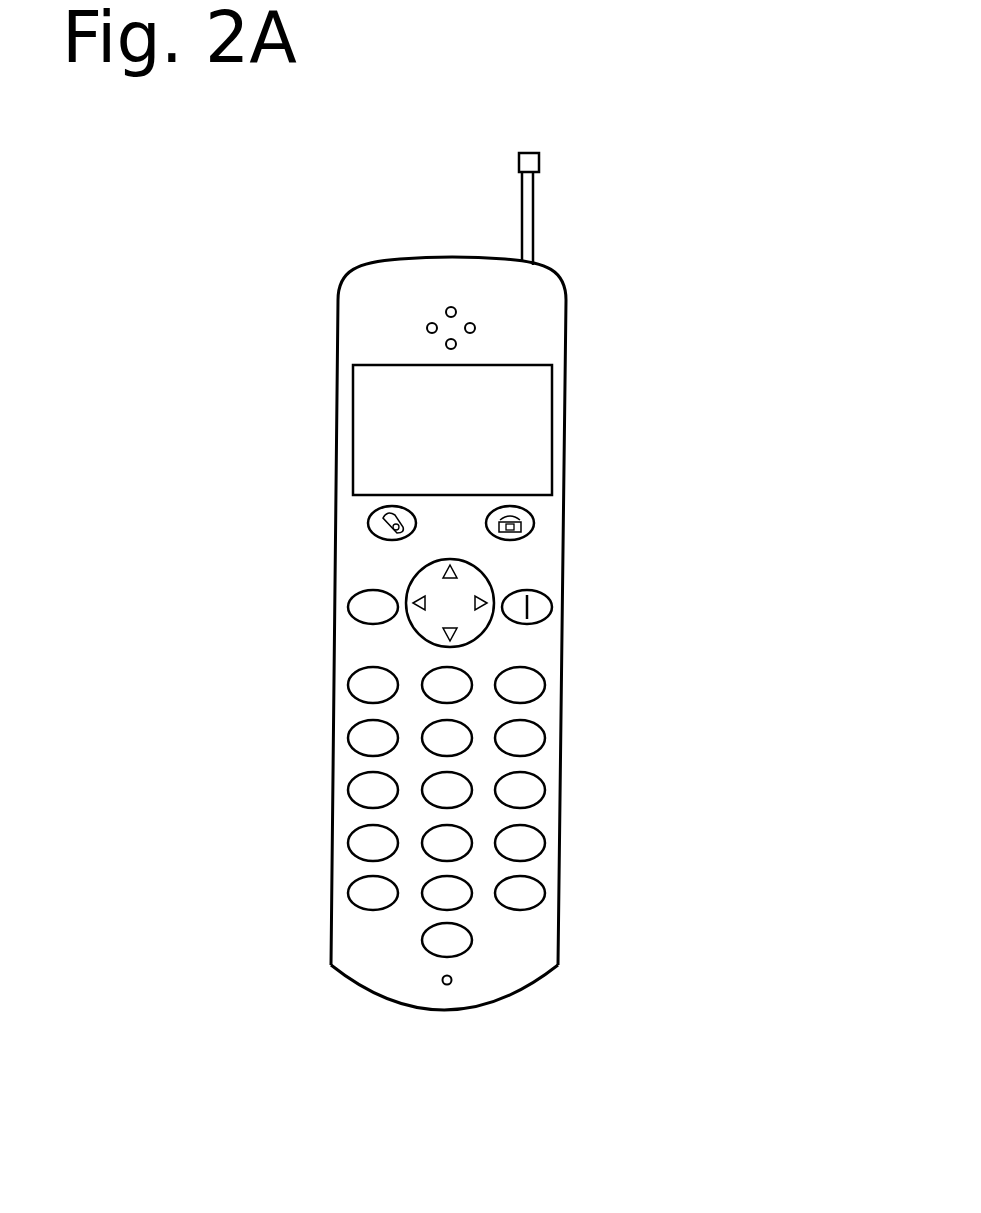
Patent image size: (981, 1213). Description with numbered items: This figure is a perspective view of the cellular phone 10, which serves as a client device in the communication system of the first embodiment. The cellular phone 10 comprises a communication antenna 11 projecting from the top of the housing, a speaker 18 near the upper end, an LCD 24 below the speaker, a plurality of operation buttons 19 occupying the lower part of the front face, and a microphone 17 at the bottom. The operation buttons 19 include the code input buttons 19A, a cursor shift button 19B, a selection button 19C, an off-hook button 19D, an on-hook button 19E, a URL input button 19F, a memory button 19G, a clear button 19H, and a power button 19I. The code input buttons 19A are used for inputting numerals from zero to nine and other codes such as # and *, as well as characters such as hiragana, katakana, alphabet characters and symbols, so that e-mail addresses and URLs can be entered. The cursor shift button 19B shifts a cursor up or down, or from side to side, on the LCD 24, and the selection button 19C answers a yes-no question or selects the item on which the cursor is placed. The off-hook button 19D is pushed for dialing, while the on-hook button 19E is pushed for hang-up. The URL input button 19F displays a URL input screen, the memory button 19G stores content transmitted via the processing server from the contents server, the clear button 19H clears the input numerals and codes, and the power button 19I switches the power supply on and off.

The cellular phone 10 is at (582, 532).
The communication antenna 11 is at (533, 205).
The microphone 17 is at (452, 978).
The speaker 18 is at (475, 327).
The LCD 24 is at (510, 432).
The operation buttons 19 is at (553, 739).
The code input buttons 19A is at (545, 788).
The cursor shift button 19B is at (488, 625).
The selection button 19C is at (348, 607).
The off-hook button 19D is at (368, 523).
The on-hook button 19E is at (534, 521).
The URL input button 19F is at (552, 605).
The memory button 19G is at (545, 893).
The clear button 19H is at (348, 893).
The power button 19I is at (424, 946).